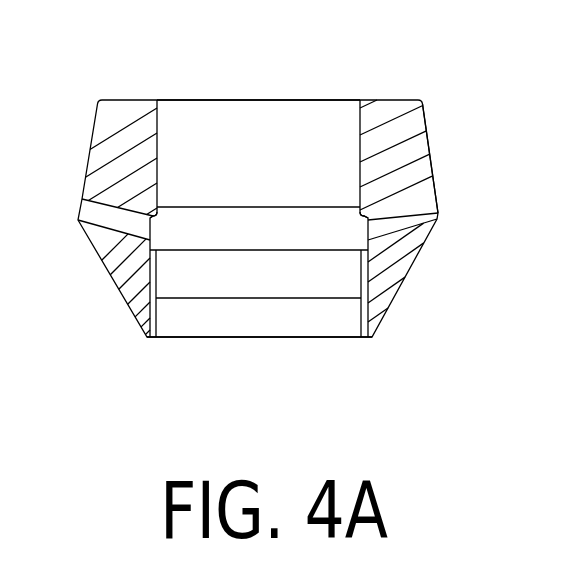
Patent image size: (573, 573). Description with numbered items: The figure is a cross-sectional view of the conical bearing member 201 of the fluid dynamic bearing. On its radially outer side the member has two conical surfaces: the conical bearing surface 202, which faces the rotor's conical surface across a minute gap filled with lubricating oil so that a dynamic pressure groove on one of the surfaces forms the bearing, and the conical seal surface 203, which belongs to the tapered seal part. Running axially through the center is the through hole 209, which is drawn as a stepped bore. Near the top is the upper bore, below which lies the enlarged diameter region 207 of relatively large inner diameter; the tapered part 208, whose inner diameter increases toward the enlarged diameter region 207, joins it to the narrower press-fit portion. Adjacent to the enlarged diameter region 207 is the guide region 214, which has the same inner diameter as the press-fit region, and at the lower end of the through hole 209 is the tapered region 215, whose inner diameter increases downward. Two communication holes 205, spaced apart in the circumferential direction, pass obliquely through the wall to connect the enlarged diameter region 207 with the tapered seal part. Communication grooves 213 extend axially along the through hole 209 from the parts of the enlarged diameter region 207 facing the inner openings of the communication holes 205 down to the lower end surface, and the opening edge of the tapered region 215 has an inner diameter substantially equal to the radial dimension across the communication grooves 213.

The conical bearing member 201 is at (383, 100).
The conical bearing surface 202 is at (398, 290).
The conical seal surface 203 is at (430, 157).
The communication holes 205 is at (92, 224).
The enlarged diameter region 207 is at (268, 230).
The tapered part 208 is at (360, 210).
The through hole 209 is at (190, 120).
The communication grooves 213 is at (153, 282).
The guide region 214 is at (195, 268).
The tapered region 215 is at (270, 320).